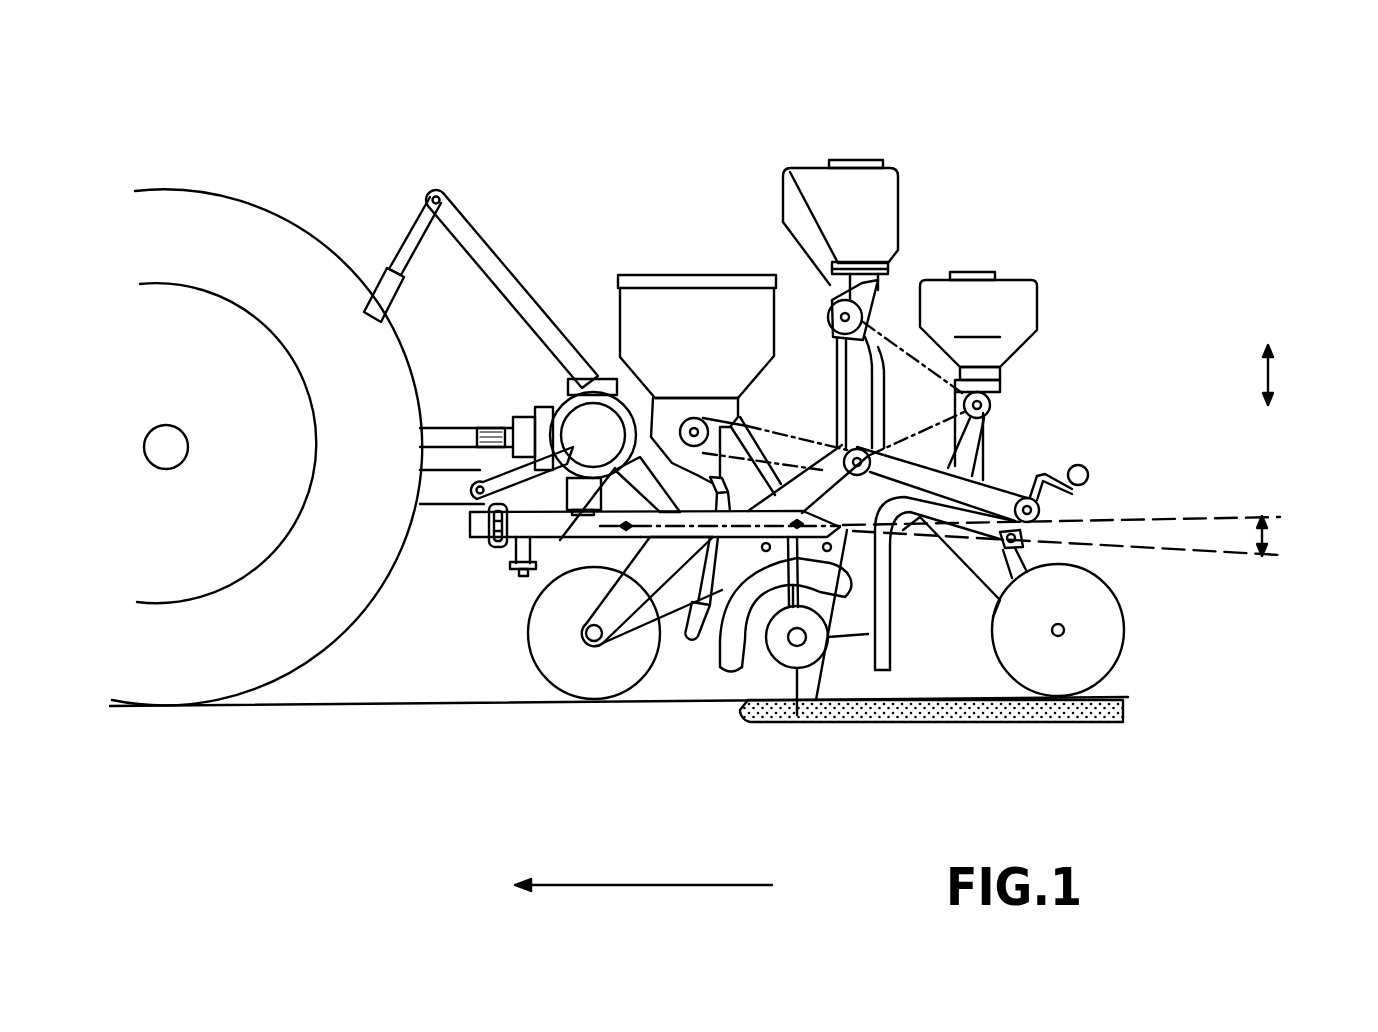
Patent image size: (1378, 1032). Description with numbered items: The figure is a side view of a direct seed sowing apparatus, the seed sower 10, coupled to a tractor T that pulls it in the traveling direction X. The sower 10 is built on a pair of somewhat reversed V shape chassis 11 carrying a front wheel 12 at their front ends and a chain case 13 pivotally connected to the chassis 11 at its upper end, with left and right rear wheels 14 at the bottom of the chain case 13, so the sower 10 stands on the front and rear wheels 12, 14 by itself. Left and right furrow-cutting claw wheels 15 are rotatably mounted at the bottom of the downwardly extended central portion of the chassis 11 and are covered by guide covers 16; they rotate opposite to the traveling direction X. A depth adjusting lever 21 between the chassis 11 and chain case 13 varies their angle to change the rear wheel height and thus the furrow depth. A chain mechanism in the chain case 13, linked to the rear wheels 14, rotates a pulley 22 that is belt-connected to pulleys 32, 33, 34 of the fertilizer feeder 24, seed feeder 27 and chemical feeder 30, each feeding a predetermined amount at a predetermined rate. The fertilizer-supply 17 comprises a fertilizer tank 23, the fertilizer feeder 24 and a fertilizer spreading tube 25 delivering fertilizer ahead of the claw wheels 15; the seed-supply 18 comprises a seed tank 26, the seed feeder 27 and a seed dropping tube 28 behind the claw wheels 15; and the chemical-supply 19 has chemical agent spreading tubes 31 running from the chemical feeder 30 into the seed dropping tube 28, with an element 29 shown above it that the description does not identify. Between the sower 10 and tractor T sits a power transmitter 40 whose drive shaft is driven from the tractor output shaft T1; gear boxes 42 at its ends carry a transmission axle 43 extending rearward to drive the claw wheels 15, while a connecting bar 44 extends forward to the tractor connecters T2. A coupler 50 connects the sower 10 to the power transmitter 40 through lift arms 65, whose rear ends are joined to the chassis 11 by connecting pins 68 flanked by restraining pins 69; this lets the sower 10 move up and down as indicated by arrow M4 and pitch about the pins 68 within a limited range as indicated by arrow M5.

The seed sower 10 is at (1115, 379).
The chassis 11 is at (988, 465).
The front wheel 12 is at (565, 683).
The chain case 13 is at (1010, 570).
The rear wheels 14 is at (1110, 627).
The furrow-cutting claw wheels 15 is at (832, 676).
The guide covers 16 is at (728, 670).
The fertilizer-supply 17 is at (680, 232).
The seed-supply 18 is at (840, 125).
The chemical-supply 19 is at (1025, 223).
The depth adjusting lever 21 is at (1092, 490).
The pulley 22 is at (875, 452).
The fertilizer tank 23 is at (713, 298).
The fertilizer feeder 24 is at (690, 418).
The fertilizer spreading tube 25 is at (690, 630).
The seed tank 26 is at (893, 180).
The seed feeder 27 is at (783, 170).
The seed dropping tube 28 is at (892, 660).
The granular hopper 29 is at (934, 290).
The chemical feeder 30 is at (992, 388).
The chemical agent spreading tubes 31 is at (905, 532).
The pulley 32 is at (657, 400).
The pulley 33 is at (832, 293).
The pulley 34 is at (992, 405).
The power transmitter 40 is at (531, 262).
The gear boxes 42 is at (570, 403).
The transmission axle 43 is at (608, 514).
The connecting bar 44 is at (478, 250).
The coupler 50 is at (485, 598).
The lift arms 65 is at (645, 530).
The connecting pins 68 is at (789, 640).
The restraining pins 69 is at (826, 552).
The tractor T is at (180, 388).
The output shaft T1 is at (450, 432).
The connecters T2 is at (410, 233).
The arrow M4 is at (1300, 375).
The arrow M5 is at (1307, 537).
The traveling direction X is at (661, 886).